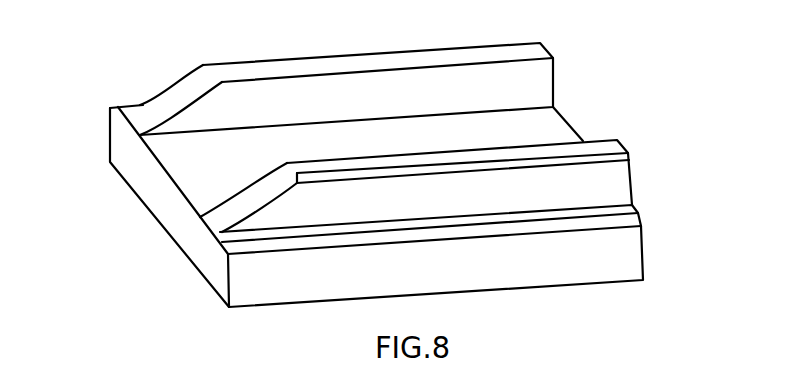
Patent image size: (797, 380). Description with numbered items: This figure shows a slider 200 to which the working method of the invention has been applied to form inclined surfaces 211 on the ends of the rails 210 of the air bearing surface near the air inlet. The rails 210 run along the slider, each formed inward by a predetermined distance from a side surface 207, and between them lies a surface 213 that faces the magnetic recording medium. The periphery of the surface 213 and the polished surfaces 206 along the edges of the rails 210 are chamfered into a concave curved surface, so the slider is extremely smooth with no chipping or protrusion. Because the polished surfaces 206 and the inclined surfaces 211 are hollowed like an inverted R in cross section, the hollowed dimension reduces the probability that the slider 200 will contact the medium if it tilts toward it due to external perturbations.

The slider 200 is at (589, 122).
The polished surfaces 206 is at (622, 158).
The side surface 207 is at (622, 265).
The rails 210 is at (542, 42).
The inclined surfaces 211 is at (152, 122).
The surface facing a magnetic recording medium 213 is at (542, 107).